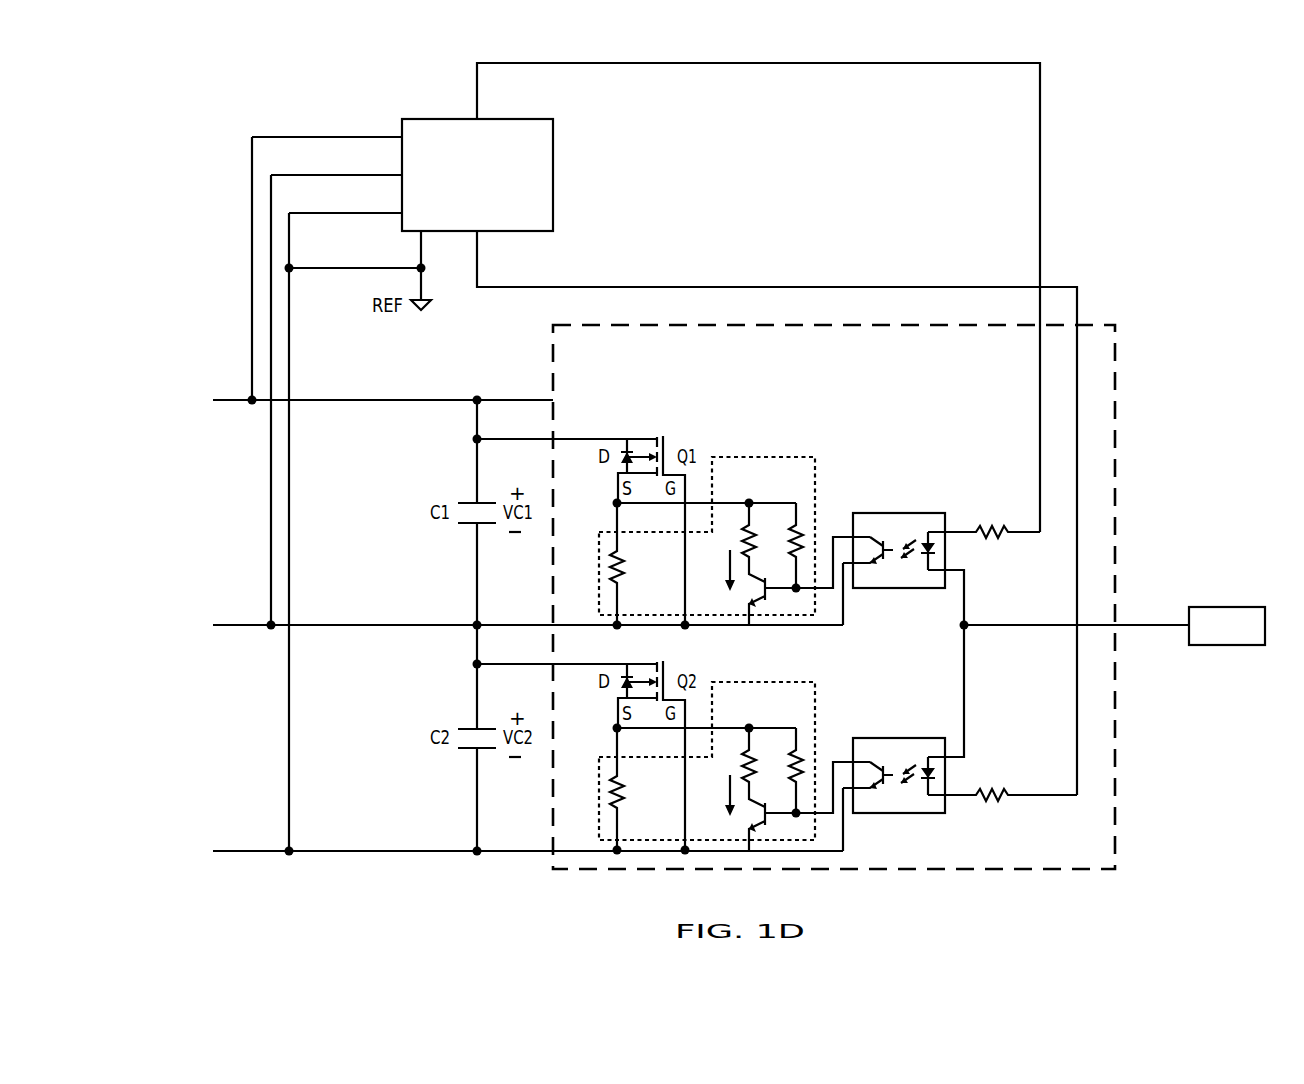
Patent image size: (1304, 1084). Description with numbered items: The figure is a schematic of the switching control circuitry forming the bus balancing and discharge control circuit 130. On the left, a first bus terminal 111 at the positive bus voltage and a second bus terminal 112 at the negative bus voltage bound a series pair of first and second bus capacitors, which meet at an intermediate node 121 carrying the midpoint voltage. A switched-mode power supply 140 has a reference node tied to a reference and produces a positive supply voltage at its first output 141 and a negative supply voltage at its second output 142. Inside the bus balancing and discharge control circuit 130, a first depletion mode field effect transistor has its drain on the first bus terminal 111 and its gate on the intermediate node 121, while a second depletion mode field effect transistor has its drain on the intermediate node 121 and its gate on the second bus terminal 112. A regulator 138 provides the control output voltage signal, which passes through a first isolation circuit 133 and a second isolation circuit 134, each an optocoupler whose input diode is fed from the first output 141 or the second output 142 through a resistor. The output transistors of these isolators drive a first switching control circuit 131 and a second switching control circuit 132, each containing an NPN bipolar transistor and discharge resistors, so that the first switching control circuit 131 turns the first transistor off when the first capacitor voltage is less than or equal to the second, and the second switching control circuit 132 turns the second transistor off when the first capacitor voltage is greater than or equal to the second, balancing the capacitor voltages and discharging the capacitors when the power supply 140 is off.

The first bus terminal 111 is at (244, 398).
The second bus terminal 112 is at (244, 849).
The intermediate node 121 is at (244, 623).
The bus balancing and discharge control circuit 130 is at (742, 325).
The first switching control circuit 131 is at (797, 457).
The second switching control circuit 132 is at (797, 682).
The first isolation circuit 133 is at (896, 513).
The second isolation circuit 134 is at (896, 738).
The regulator 138 is at (1230, 607).
The power supply 140 is at (421, 118).
The first output 141 is at (477, 96).
The second output 142 is at (477, 266).